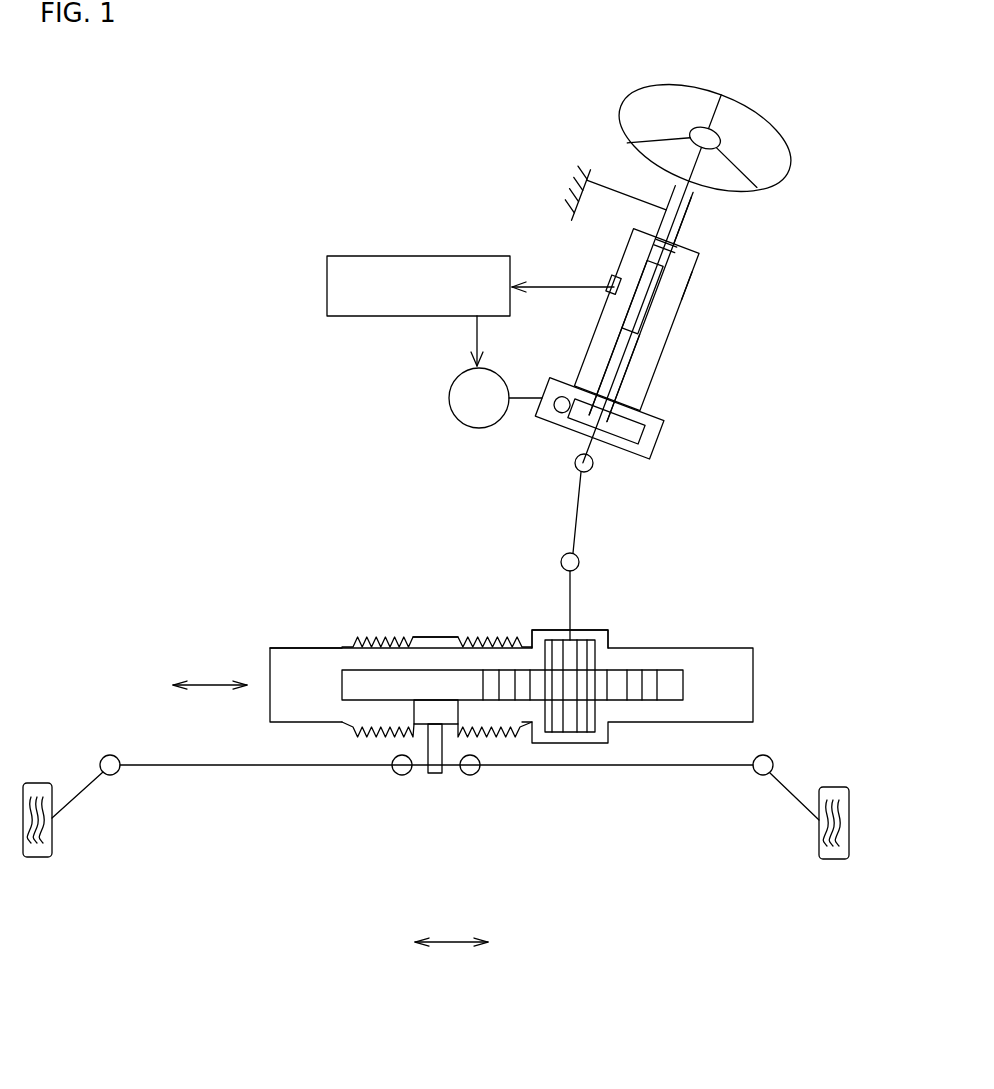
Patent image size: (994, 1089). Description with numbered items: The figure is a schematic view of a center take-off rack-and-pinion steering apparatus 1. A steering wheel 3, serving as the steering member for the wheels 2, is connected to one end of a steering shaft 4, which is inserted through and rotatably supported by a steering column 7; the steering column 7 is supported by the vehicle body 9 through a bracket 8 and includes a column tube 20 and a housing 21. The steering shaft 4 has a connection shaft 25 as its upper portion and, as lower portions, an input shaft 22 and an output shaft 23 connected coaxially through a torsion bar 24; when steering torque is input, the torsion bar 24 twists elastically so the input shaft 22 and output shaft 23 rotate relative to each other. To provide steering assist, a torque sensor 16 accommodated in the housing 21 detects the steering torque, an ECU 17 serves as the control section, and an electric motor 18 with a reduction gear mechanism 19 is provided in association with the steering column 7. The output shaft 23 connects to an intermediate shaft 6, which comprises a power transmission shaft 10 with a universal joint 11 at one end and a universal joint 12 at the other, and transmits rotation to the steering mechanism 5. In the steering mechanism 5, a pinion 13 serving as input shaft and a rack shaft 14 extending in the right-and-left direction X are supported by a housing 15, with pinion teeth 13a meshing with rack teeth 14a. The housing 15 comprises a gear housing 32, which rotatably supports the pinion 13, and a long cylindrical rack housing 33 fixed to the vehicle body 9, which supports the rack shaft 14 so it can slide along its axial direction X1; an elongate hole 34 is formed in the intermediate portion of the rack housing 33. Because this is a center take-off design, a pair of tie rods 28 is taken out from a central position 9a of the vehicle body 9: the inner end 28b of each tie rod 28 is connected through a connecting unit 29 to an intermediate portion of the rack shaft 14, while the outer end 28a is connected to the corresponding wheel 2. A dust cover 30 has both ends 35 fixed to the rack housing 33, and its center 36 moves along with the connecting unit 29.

The center take-off rack-and-pinion steering apparatus 1 is at (546, 85).
The wheels 2 is at (37, 857).
The steering wheel 3 is at (690, 92).
The steering shaft 4 is at (682, 207).
The steering mechanism 5 is at (587, 850).
The intermediate shaft 6 is at (675, 508).
The steering column 7 is at (663, 355).
The bracket 8 is at (612, 190).
The vehicle body 9 is at (572, 222).
The central position 9a is at (446, 783).
The power transmission shaft 10 is at (578, 512).
The universal joint 11 is at (593, 463).
The universal joint 12 is at (579, 562).
The pinion 13 is at (595, 645).
The pinion teeth 13a is at (568, 732).
The rack shaft 14 is at (699, 691).
The rack teeth 14a is at (627, 690).
The housing 15 is at (297, 640).
The torque sensor 16 is at (615, 280).
The ECU 17 is at (358, 256).
The electric motor 18 is at (449, 398).
The reduction gear mechanism 19 is at (665, 428).
The column tube 20 is at (690, 222).
The housing 21 is at (560, 378).
The input shaft 22 is at (688, 287).
The output shaft 23 is at (620, 377).
The torsion bar 24 is at (648, 320).
The connection shaft 25 is at (678, 230).
The tie rod 28 is at (240, 768).
The outer end 28a is at (135, 768).
The inner end 28b is at (372, 768).
The connecting unit 29 is at (435, 775).
The dust cover 30 is at (425, 635).
The gear housing 32 is at (555, 630).
The rack housing 33 is at (315, 648).
The elongate hole 34 is at (406, 718).
The ends of the dust cover 35 is at (350, 645).
The center of the dust cover 36 is at (443, 637).
The right-and-left direction X is at (452, 945).
The axial direction X1 is at (210, 683).